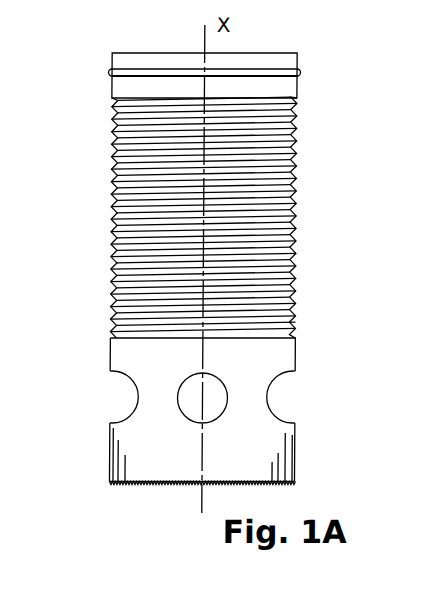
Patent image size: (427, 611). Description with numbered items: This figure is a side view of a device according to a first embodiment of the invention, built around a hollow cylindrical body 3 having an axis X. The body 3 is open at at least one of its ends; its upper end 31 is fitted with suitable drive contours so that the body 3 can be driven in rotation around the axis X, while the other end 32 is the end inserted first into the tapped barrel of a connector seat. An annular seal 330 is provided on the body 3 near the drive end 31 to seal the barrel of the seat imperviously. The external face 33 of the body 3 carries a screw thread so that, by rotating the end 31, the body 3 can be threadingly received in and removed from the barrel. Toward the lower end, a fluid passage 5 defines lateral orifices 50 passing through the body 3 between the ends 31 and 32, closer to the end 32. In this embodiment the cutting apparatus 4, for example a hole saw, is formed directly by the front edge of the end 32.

The end 31 is at (142, 53).
The annular seal 330 is at (300, 72).
The hollow cylindrical body 3 is at (107, 208).
The external face 33 is at (299, 214).
The other end 32 is at (298, 448).
The fluid passage 5 is at (132, 379).
The lateral orifice 50 is at (181, 390).
The cutting apparatus 4 is at (131, 484).